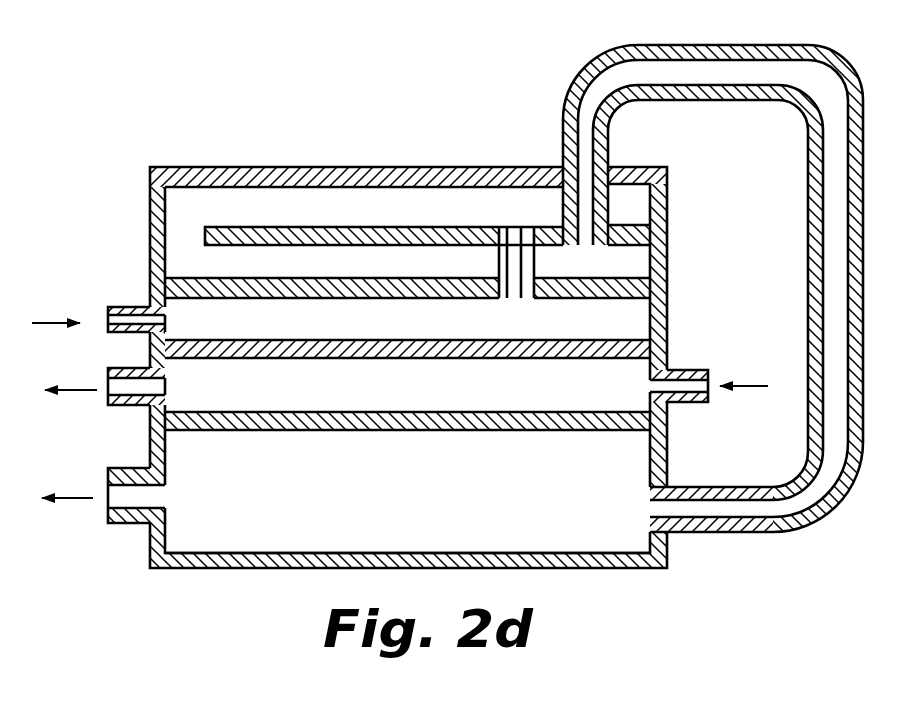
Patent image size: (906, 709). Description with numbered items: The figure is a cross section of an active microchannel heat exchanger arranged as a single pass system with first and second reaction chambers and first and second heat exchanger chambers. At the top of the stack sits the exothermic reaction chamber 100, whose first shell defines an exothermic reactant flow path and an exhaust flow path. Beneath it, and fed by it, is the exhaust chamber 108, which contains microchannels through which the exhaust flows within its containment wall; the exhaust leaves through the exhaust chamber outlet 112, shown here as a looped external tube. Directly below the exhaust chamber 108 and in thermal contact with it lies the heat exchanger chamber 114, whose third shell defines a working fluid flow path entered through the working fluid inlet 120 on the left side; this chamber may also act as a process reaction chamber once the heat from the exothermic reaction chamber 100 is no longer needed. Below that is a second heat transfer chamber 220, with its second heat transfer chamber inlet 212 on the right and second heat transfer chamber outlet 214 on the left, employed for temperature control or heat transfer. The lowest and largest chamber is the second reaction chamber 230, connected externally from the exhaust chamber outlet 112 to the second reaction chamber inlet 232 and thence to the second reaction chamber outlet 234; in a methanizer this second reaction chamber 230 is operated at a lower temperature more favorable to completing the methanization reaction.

The exothermic reaction chamber 100 is at (397, 220).
The exhaust chamber 108 is at (399, 275).
The exhaust chamber outlet 112 is at (607, 147).
The heat exchanger chamber 114 is at (399, 333).
The working fluid inlet 120 is at (128, 308).
The second heat transfer chamber inlet 212 is at (687, 370).
The second heat transfer chamber outlet 214 is at (130, 368).
The second heat transfer chamber 220 is at (397, 397).
The second reaction chamber 230 is at (397, 506).
The second reaction chamber inlet 232 is at (688, 530).
The second reaction chamber outlet 234 is at (138, 525).